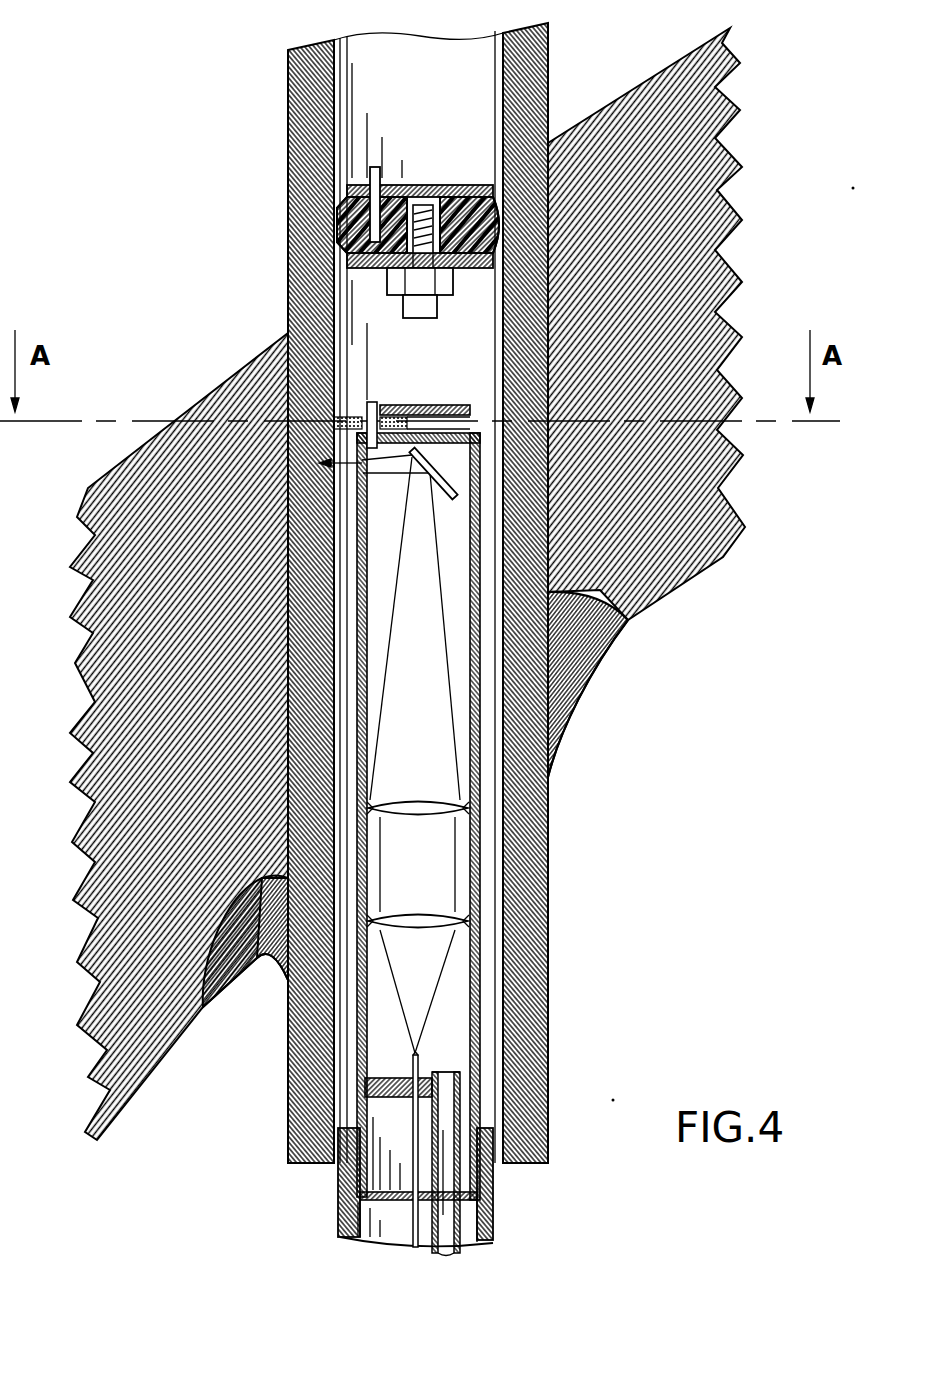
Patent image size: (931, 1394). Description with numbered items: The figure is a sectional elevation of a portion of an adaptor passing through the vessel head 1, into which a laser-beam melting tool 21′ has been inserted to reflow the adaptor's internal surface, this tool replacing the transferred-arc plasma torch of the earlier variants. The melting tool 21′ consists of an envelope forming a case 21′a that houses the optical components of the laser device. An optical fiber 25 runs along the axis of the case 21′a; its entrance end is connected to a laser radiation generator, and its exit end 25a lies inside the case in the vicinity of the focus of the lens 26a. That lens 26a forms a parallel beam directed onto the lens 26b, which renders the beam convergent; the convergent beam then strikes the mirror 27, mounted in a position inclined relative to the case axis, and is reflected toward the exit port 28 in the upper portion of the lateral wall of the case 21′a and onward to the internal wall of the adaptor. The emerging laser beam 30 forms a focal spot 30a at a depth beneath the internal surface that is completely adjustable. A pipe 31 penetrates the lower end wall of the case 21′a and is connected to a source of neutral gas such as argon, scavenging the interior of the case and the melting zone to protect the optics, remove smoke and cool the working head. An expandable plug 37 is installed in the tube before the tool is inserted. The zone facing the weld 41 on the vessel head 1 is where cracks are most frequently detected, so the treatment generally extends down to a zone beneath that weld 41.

The vessel head 1 is at (672, 155).
The expandable plug 37 is at (455, 163).
The exit port 28 is at (322, 462).
The focal spot 30a is at (300, 425).
The mirror 27 is at (442, 487).
The weld 41 is at (585, 640).
The laser beam 30 is at (560, 728).
The case 21′a is at (522, 770).
The laser-beam melting tool 21′ is at (489, 876).
The lens 26b is at (395, 812).
The lens 26a is at (425, 924).
The exit end 25a is at (414, 1054).
The optical fiber 25 is at (413, 1248).
The pipe 31 is at (448, 1250).